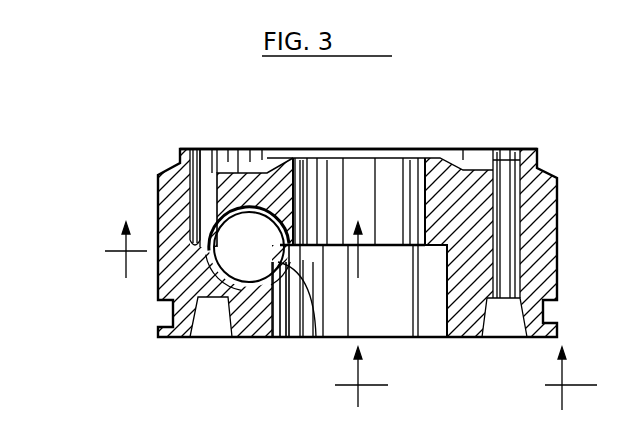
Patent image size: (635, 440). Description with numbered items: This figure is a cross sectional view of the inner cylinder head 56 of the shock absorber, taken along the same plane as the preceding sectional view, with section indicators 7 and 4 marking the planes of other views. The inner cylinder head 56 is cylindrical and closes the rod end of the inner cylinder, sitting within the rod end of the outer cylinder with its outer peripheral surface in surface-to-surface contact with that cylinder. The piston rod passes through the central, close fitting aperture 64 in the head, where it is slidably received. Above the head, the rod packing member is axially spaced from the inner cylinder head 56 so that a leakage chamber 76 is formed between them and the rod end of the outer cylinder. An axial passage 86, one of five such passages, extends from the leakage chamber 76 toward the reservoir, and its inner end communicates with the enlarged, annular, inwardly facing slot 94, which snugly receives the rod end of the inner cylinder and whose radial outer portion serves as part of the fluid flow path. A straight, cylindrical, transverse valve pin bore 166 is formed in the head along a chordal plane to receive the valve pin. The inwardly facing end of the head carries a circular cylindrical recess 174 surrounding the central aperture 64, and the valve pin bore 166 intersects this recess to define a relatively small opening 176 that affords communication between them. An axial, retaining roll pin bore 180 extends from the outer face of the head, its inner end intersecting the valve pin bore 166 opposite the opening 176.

The roll pin bore 180 is at (197, 152).
The leakage chamber 76 is at (230, 162).
The inner cylinder head 56 is at (360, 149).
The central aperture 64 is at (397, 172).
The axial passage 86 is at (530, 152).
The valve pin bore 166 is at (213, 272).
The circular cylindrical recess 174 is at (288, 328).
The opening 176 is at (317, 340).
The annular slot 94 is at (505, 322).
The section line 7- 7 is at (245, 253).
The section line 4- 4 is at (465, 378).